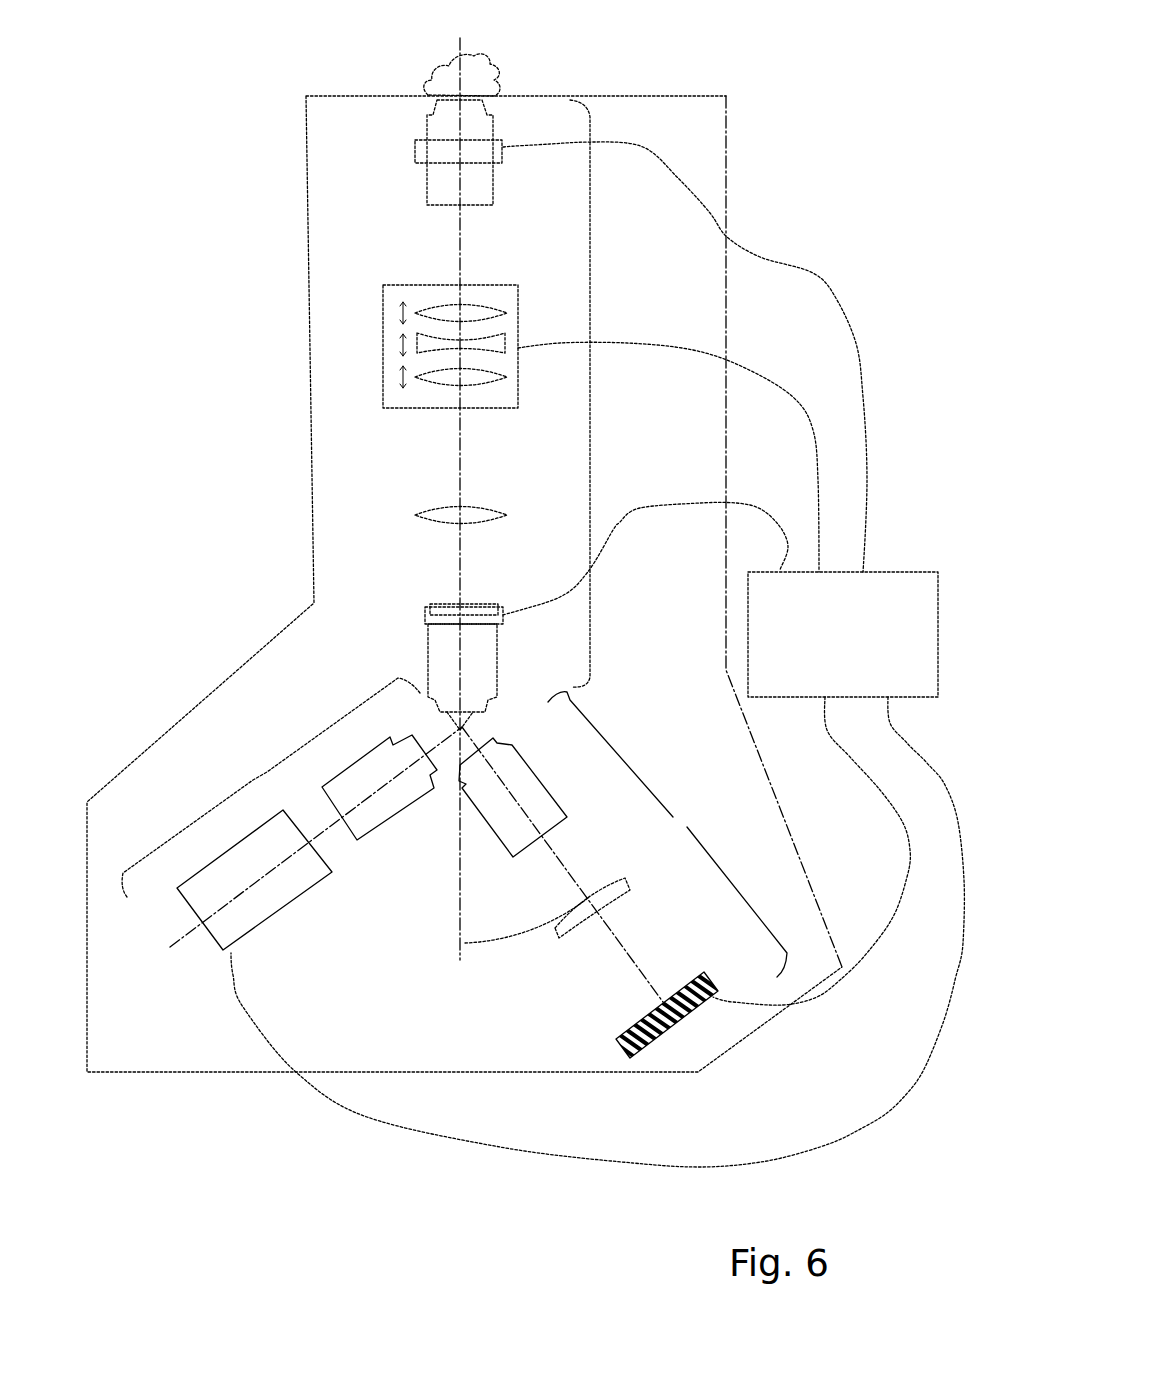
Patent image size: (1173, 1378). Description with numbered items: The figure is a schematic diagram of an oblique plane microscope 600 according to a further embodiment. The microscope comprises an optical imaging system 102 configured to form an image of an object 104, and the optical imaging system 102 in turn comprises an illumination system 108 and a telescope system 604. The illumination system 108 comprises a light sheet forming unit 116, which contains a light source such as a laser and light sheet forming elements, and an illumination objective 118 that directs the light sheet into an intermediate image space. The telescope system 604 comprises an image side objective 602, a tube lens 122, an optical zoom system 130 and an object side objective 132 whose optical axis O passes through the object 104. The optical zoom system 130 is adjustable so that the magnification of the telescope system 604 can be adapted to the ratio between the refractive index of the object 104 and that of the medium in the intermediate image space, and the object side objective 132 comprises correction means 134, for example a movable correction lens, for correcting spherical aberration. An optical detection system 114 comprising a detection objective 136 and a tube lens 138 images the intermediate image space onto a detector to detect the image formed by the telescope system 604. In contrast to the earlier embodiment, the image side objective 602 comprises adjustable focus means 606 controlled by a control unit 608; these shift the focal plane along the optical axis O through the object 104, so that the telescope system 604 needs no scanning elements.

The optical imaging system 102 is at (726, 172).
The object 104 is at (496, 74).
The illumination system 108 is at (267, 772).
The optical detection system 114 is at (673, 817).
The light sheet forming unit 116 is at (272, 912).
The illumination objective 118 is at (388, 820).
The tube lens 122 is at (507, 514).
The optical zoom system 130 is at (518, 322).
The object side objective 132 is at (493, 120).
The correction means 134 is at (502, 158).
The detection objective 136 is at (530, 764).
The tube lens 138 is at (628, 884).
The oblique plane microscope 600 is at (276, 293).
The image side objective 602 is at (497, 640).
The telescope system 604 is at (590, 380).
The adjustable focus means 606 is at (500, 607).
The control unit 608 is at (862, 651).
The optical axis O is at (466, 243).